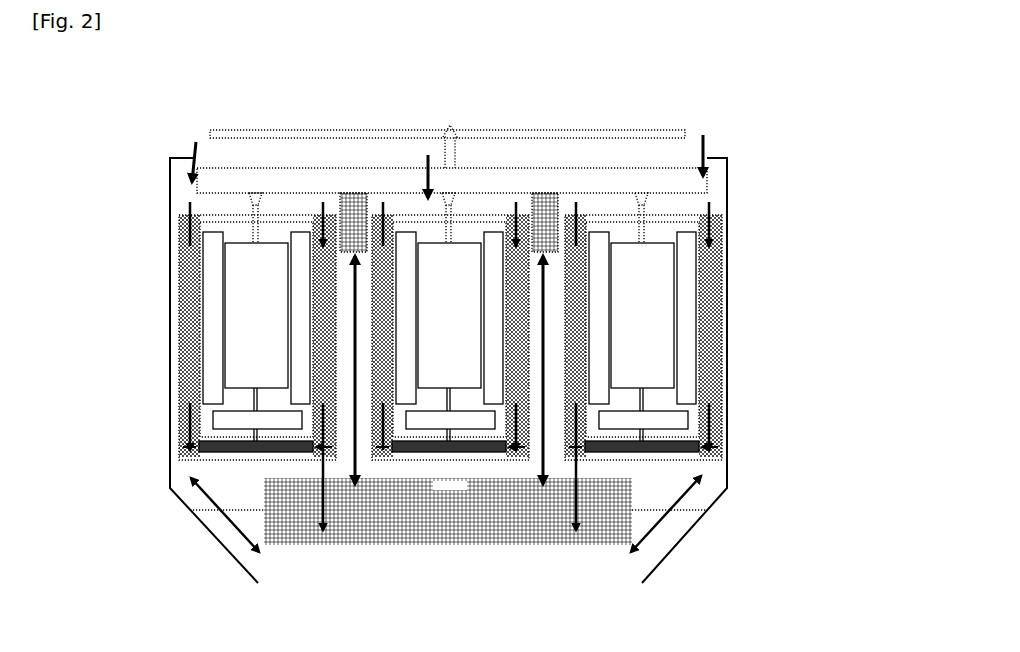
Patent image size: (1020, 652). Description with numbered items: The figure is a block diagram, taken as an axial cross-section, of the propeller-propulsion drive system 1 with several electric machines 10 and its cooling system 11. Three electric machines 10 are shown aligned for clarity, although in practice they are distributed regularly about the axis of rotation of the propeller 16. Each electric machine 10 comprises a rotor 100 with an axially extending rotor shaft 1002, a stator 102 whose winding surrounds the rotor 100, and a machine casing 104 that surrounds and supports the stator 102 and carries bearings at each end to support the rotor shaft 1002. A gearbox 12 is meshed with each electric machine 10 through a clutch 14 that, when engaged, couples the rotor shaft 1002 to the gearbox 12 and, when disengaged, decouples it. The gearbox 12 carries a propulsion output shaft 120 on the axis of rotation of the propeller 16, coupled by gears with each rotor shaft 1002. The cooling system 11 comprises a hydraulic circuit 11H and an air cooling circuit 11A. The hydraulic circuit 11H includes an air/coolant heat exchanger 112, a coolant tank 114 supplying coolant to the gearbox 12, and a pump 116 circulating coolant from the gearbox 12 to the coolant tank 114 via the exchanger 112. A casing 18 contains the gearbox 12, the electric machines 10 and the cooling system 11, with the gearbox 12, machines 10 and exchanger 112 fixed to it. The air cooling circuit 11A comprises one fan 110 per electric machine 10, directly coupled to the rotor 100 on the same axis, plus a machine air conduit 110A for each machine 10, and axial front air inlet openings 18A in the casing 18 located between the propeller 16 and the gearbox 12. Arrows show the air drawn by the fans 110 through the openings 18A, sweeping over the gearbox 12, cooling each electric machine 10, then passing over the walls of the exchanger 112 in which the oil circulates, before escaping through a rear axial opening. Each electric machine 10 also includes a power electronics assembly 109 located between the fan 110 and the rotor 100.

The propeller-propulsion drive system 1 is at (526, 377).
The electric machine 10 is at (186, 313).
The rotor 100 is at (736, 315).
The stator 102 is at (785, 318).
The machine casing 104 is at (181, 315).
The power electronics assembly 109 is at (727, 417).
The fan 110 is at (729, 443).
The machine air conduit 110A is at (120, 336).
The cooling system 11 is at (216, 530).
The air cooling circuit 11A is at (200, 351).
The hydraulic circuit 11H is at (256, 482).
The air/coolant heat exchanger 112 is at (433, 507).
The coolant tank 114 is at (553, 208).
The pump 116 is at (353, 207).
The gearbox 12 is at (237, 185).
The propulsion output shaft 120 is at (450, 158).
The clutch 14 is at (743, 187).
The rotor shaft 1002 is at (756, 218).
The propeller 16 is at (355, 133).
The casing 18 is at (732, 477).
The air inlet openings 18A is at (190, 157).